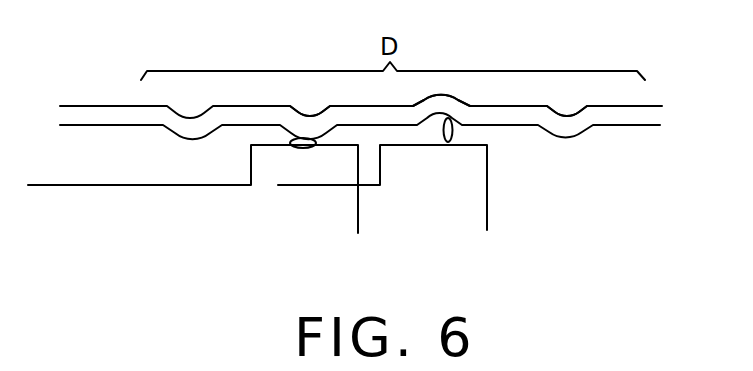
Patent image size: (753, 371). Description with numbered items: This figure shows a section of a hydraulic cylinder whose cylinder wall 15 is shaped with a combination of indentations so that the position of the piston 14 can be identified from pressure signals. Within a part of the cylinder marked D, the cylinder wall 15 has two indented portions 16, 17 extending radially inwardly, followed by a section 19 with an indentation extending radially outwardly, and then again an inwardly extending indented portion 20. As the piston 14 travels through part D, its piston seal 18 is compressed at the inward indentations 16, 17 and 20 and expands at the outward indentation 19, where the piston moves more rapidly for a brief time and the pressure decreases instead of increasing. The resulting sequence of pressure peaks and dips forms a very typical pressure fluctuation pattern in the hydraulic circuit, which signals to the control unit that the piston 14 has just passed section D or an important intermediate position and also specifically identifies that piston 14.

The piston 14 is at (295, 208).
The cylinder wall 15 is at (83, 115).
The indented portion 16 is at (308, 116).
The indented portion 17 is at (310, 111).
The piston seal 18 is at (310, 137).
The radially outward indentation 19 is at (441, 95).
The indented portion 20 is at (565, 115).